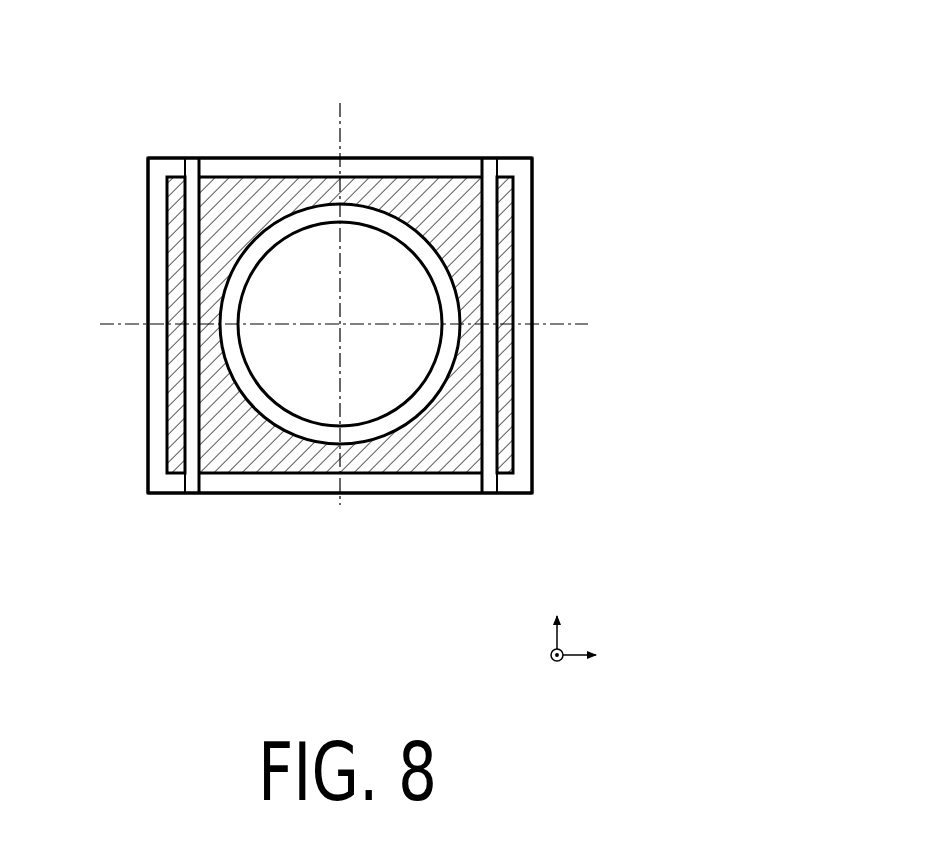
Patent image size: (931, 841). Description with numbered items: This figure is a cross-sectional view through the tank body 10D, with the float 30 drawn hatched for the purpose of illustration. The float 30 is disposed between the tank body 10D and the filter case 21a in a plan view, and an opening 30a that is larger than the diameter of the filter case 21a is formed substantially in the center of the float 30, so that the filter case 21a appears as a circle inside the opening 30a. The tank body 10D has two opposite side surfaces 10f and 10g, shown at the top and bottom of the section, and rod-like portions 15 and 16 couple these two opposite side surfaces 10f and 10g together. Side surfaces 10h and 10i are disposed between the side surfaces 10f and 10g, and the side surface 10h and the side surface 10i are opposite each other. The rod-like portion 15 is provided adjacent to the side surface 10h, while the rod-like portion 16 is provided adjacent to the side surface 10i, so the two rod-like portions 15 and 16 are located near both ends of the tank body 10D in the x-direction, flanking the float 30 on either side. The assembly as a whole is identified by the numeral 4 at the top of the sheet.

The lens unit 4 is at (558, 31).
The tank body 10D is at (396, 325).
The side surface 10f is at (340, 126).
The side surface 10g is at (340, 532).
The side surface 10h is at (96, 325).
The side surface 10i is at (577, 325).
The rod-like portion 15 is at (136, 317).
The rod-like portion 16 is at (551, 313).
The float 30 is at (400, 325).
The opening 30a is at (370, 276).
The filter case 21a is at (243, 321).